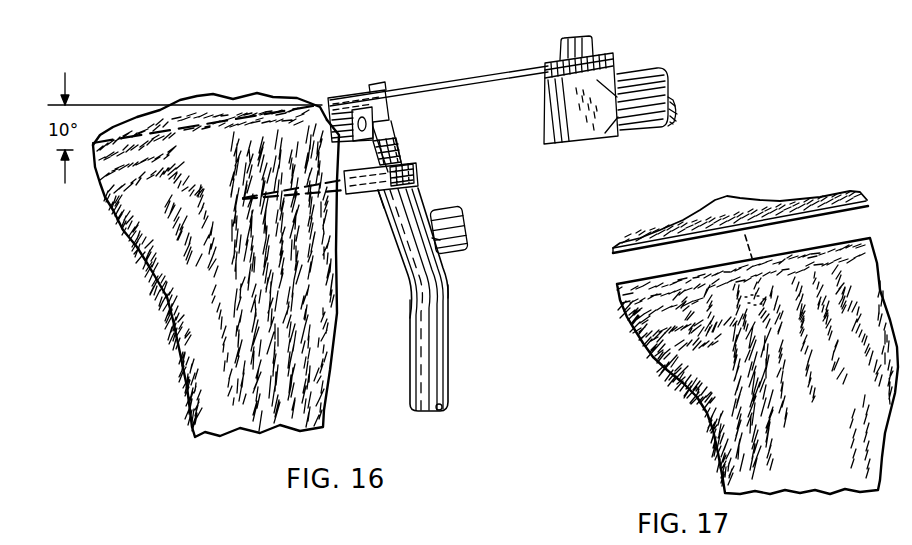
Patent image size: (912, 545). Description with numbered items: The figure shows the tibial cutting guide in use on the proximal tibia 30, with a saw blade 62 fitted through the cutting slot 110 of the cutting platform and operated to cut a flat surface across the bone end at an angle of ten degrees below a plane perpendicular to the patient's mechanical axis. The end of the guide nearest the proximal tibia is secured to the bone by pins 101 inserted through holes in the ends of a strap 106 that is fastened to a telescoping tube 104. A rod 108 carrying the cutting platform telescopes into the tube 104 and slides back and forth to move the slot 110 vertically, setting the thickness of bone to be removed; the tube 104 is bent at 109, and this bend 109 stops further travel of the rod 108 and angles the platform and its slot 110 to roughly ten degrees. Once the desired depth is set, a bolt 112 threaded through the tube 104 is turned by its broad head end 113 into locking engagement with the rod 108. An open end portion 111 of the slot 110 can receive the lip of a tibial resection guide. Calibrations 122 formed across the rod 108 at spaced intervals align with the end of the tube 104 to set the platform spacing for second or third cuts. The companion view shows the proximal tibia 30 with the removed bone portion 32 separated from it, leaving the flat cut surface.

In FIG. 16, the tibia 30 is at (170, 320).
In FIG. 17, the tibia 30 is at (710, 431).
In FIG. 16, the bone portion 32 is at (197, 96).
In FIG. 17, the bone portion 32 is at (727, 194).
In FIG. 16, the saw blade 62 is at (470, 80).
In FIG. 16, the pins 101 is at (410, 175).
In FIG. 16, the telescoping tube 104 is at (443, 353).
In FIG. 16, the strap 106 is at (372, 196).
In FIG. 16, the rod 108 is at (388, 137).
In FIG. 16, the bend 109 is at (443, 281).
In FIG. 16, the cutting slot 110 is at (388, 106).
In FIG. 16, the open end portion 111 is at (368, 86).
In FIG. 16, the bolt 112 is at (438, 240).
In FIG. 16, the broad head end 113 is at (456, 236).
In FIG. 16, the calibrations 122 is at (400, 148).